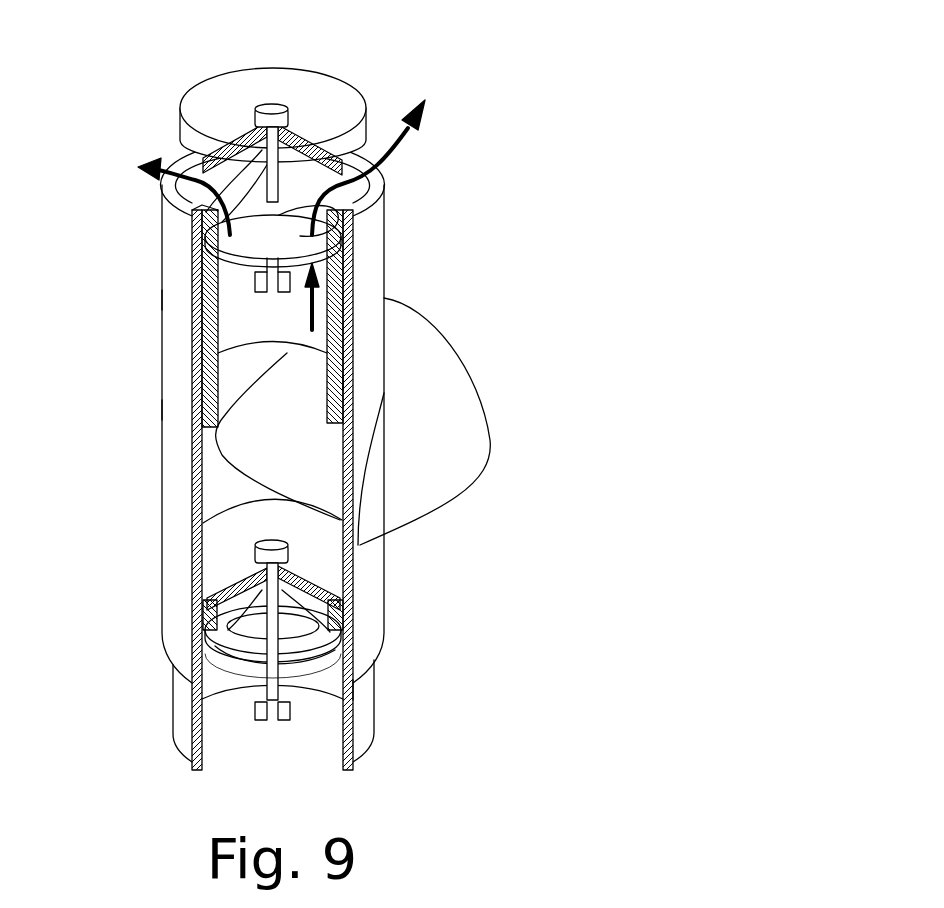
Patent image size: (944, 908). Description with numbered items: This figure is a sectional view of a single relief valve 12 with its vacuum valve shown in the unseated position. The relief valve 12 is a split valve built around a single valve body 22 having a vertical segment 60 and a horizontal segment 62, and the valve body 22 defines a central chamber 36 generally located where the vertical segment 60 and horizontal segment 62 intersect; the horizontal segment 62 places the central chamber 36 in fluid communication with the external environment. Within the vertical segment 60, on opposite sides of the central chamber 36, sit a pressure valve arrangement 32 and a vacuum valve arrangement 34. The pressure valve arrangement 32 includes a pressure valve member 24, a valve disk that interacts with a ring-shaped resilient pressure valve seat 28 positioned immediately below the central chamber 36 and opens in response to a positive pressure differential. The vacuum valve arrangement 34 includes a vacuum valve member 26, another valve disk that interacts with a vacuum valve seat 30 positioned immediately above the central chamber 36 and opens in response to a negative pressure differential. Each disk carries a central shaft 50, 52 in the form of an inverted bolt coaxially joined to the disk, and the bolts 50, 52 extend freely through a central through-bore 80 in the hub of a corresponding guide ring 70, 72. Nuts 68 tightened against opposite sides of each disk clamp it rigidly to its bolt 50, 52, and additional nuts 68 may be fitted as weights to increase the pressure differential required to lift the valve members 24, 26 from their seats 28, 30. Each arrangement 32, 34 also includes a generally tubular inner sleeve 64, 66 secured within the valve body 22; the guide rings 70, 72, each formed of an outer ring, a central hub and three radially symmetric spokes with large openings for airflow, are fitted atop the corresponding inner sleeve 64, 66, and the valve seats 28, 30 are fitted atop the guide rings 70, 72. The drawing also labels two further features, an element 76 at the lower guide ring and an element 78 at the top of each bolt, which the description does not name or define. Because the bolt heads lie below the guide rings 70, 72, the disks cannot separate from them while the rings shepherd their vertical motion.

The relief valve 12 is at (545, 188).
The valve body 22 is at (168, 370).
The pressure valve member 24 is at (220, 520).
The vacuum valve member 26 is at (355, 94).
The pressure valve seat 28 is at (207, 620).
The vacuum valve seat 30 is at (342, 215).
The pressure valve arrangement 32 is at (425, 590).
The vacuum valve arrangement 34 is at (120, 212).
The central chamber 36 is at (256, 447).
The central shaft 50 is at (342, 691).
The central shaft 52 is at (345, 245).
The vertical segment 60 is at (174, 298).
The horizontal segment 62 is at (440, 507).
The inner sleeve 64 is at (367, 737).
The inner sleeve 66 is at (340, 382).
The nuts 68 is at (273, 112).
The guide ring 70 is at (230, 650).
The guide ring 72 is at (202, 255).
The lower plate 76 is at (343, 628).
The hub nut 78 is at (283, 108).
The central through-bore 80 is at (268, 203).